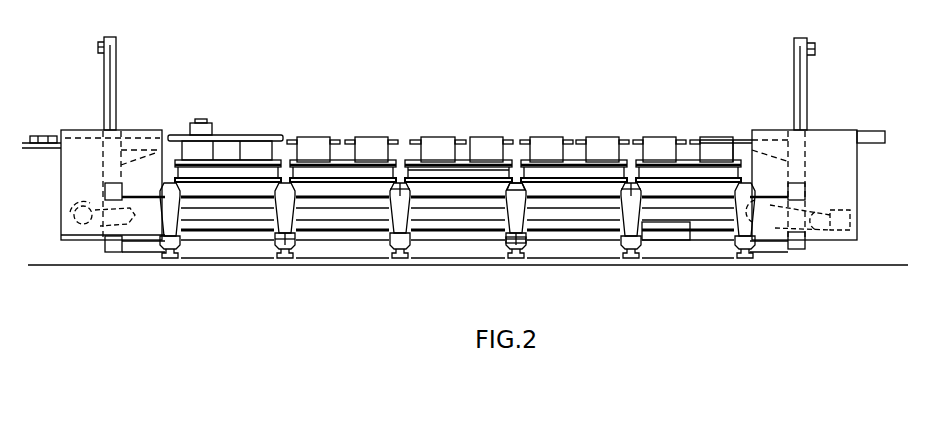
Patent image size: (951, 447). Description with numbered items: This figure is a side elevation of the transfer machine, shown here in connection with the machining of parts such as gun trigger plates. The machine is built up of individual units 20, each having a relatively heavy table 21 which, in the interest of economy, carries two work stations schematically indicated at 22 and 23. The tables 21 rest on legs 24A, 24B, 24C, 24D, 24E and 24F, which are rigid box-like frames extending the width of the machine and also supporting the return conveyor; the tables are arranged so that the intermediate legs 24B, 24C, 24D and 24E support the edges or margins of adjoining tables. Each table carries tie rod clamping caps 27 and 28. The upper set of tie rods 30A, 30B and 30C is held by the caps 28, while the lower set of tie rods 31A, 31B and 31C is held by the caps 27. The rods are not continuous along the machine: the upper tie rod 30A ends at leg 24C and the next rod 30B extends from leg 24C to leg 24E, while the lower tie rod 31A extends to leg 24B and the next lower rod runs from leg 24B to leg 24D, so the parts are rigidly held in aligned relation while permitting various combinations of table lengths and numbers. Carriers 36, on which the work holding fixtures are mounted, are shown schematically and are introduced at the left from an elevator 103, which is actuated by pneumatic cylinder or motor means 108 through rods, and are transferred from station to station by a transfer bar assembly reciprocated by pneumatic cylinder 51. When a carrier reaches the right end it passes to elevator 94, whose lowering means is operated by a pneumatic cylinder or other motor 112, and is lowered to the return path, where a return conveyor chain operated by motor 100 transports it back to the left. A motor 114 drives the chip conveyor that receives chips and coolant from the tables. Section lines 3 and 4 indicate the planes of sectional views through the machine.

The section line 3- 3 is at (878, 15).
The section line 4- 4 is at (22, 237).
The individual unit 20 is at (236, 118).
The table 21 is at (470, 172).
The work station 22 is at (201, 122).
The work station 23 is at (270, 134).
The leg 24A is at (172, 259).
The leg 24B is at (286, 259).
The leg 24C is at (400, 259).
The leg 24D is at (516, 259).
The leg 24E is at (631, 259).
The leg 24F is at (745, 259).
The tie rod clamping cap 27 is at (527, 246).
The tie rod clamping cap 28 is at (525, 184).
The upper tie rod 30A is at (233, 181).
The upper tie rod 30B is at (465, 191).
The upper tie rod 30C is at (690, 196).
The lower tie rod 31A is at (251, 206).
The lower tie rod 31B is at (350, 204).
The lower tie rod 31C is at (589, 244).
The carrier means 36 is at (328, 132).
The pneumatic cylinder 51 is at (878, 130).
The elevator 94 is at (781, 128).
The motor 100 is at (79, 226).
The elevator 103 is at (143, 130).
The motor means 108 is at (98, 46).
The motor 112 is at (815, 52).
The motor 114 is at (852, 222).